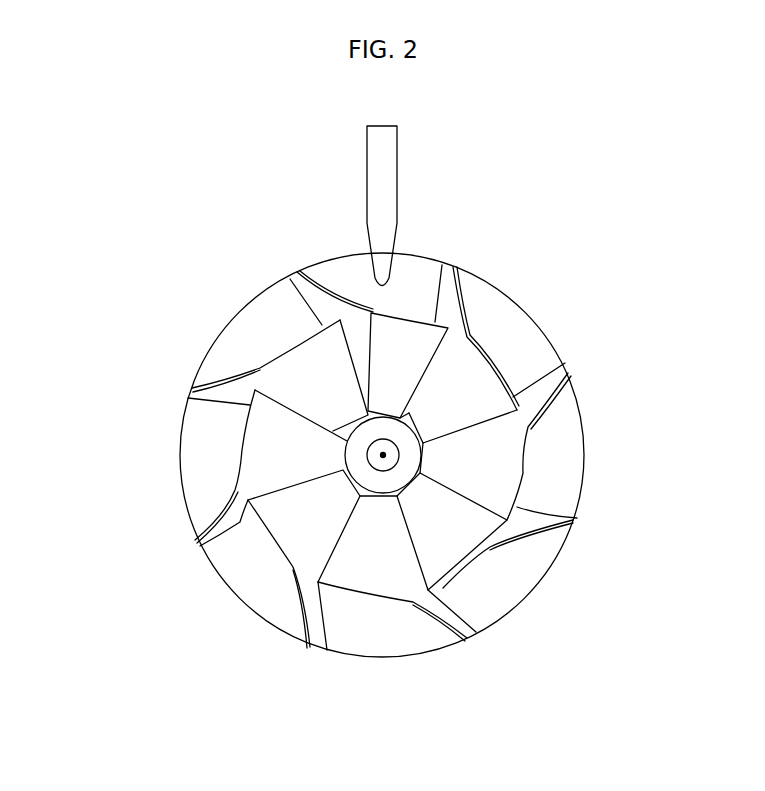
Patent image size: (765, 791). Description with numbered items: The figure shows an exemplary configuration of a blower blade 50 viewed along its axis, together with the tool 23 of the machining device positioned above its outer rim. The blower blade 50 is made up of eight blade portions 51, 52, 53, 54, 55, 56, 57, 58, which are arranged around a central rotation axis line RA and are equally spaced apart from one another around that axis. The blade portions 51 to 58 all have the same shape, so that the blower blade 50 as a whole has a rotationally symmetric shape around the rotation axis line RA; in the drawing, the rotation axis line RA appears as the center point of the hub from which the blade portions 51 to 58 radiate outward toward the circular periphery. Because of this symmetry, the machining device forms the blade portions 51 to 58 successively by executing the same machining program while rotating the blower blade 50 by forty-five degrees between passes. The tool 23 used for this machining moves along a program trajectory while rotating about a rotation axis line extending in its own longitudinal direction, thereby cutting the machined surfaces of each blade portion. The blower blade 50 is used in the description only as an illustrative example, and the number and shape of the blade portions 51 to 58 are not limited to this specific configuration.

The tool 23 is at (397, 163).
The blower blade 50 is at (141, 382).
The blade portion 51 is at (410, 278).
The blade portion 52 is at (528, 328).
The blade portion 53 is at (560, 440).
The blade portion 54 is at (515, 572).
The blade portion 55 is at (398, 630).
The blade portion 56 is at (260, 577).
The blade portion 57 is at (207, 457).
The blade portion 58 is at (237, 335).
The rotation axis line RA is at (383, 455).